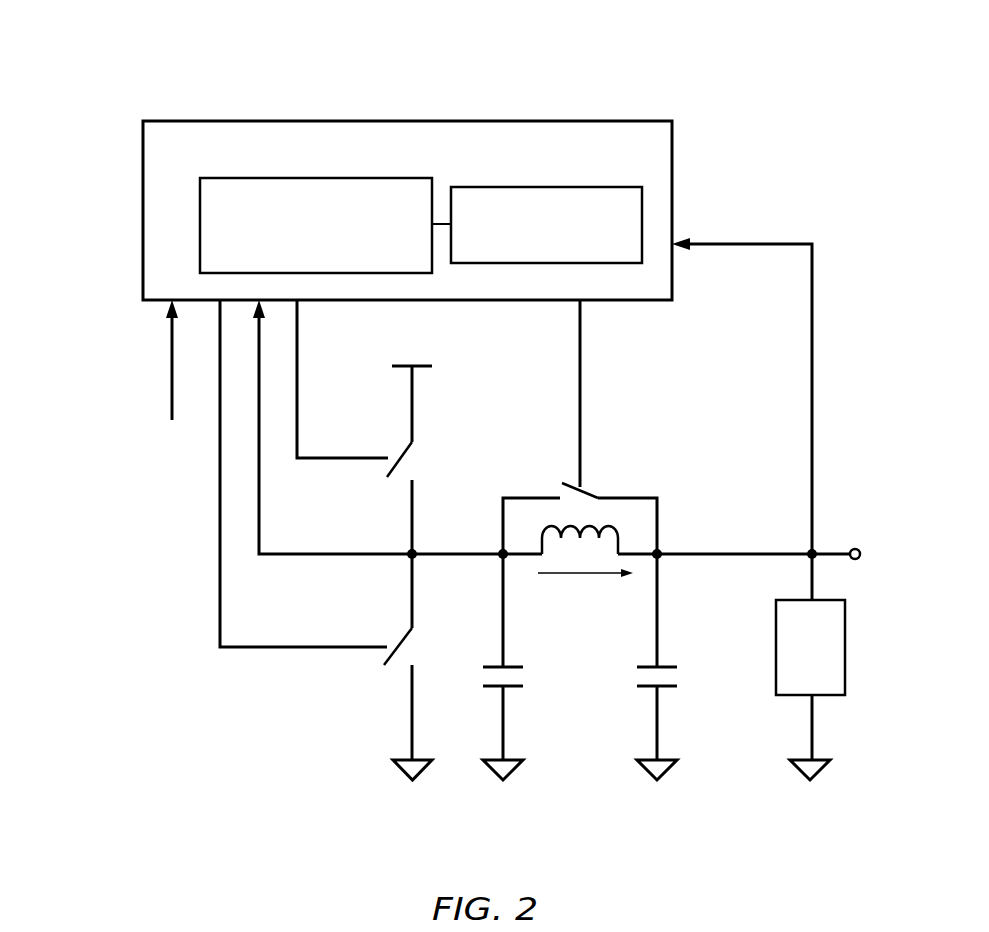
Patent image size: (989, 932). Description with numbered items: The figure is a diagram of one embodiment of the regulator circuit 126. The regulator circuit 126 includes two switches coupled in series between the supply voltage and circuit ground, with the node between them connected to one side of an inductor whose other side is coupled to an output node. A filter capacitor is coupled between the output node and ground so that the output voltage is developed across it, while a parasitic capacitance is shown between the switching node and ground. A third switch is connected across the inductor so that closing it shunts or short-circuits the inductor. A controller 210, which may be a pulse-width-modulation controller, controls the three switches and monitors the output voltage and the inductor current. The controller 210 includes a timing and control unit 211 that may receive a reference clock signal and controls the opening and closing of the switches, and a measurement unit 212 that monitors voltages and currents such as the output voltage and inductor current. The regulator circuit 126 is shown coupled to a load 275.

The regulator circuit 126 is at (148, 62).
The controller 210 is at (186, 186).
The timing and control unit 211 is at (333, 252).
The measurement unit 212 is at (564, 251).
The load 275 is at (828, 676).